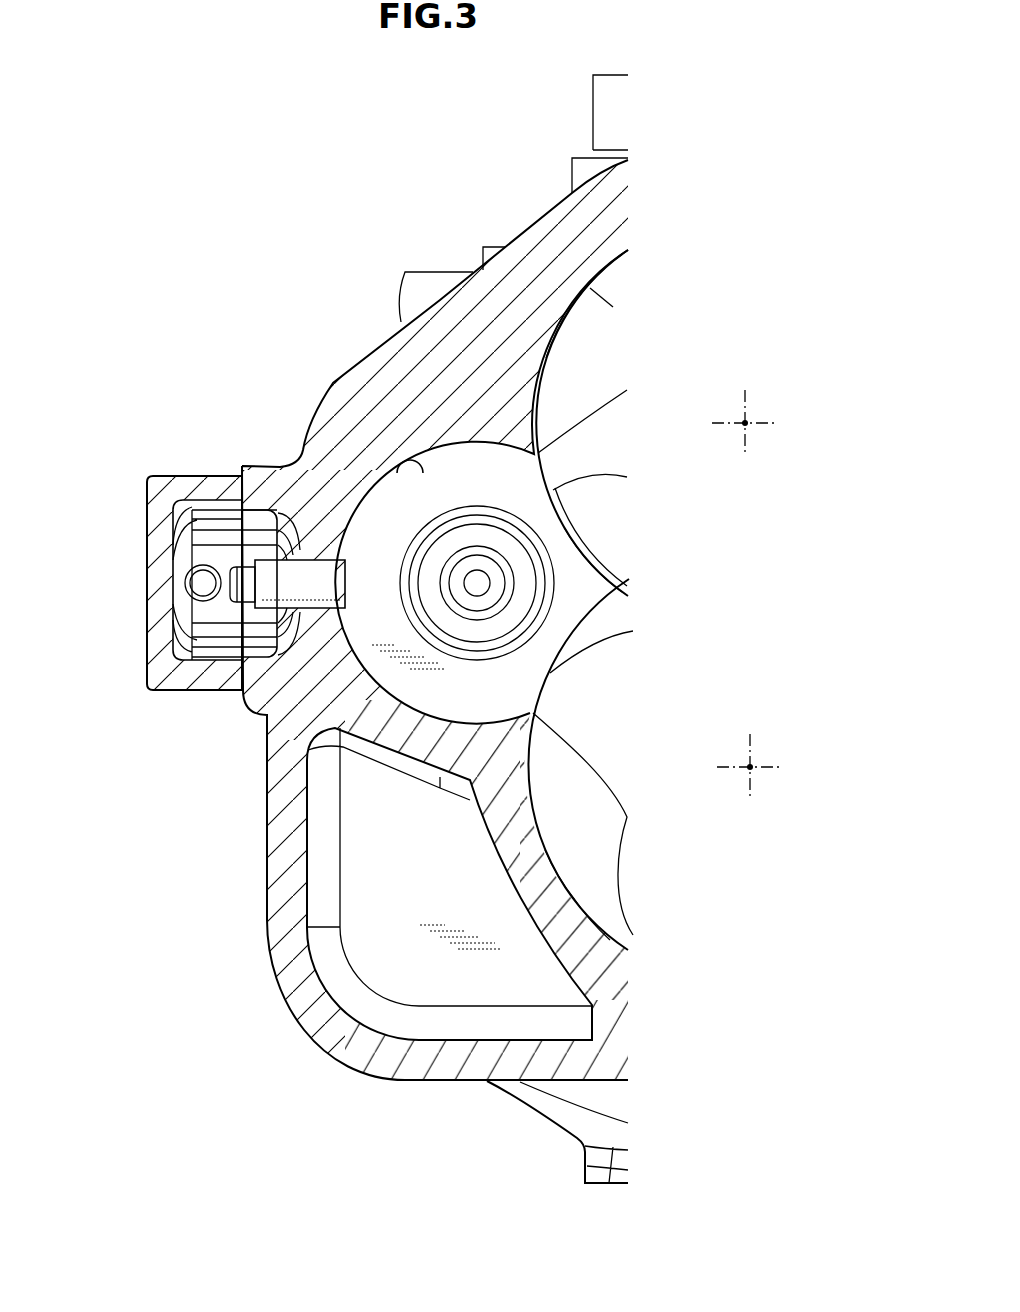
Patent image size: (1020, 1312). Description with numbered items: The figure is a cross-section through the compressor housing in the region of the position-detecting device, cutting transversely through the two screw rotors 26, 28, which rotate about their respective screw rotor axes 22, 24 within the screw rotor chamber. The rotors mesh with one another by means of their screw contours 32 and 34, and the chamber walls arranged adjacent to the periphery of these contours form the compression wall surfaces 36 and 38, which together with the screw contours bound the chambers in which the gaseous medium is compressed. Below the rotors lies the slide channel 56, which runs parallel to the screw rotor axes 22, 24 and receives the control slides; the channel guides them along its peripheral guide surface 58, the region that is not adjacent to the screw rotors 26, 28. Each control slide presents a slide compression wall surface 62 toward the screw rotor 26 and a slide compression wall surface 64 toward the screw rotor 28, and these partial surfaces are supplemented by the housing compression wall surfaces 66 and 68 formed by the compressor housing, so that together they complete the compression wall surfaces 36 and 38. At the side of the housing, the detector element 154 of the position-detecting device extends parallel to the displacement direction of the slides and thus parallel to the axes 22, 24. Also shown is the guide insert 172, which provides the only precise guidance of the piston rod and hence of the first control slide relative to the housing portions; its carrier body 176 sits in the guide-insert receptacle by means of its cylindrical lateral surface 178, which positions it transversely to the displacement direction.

The screw rotor axis 22 is at (752, 418).
The screw rotor axis 24 is at (758, 754).
The screw rotor 26 is at (600, 453).
The screw rotor 28 is at (605, 768).
The screw contour 32 is at (590, 422).
The screw contour 34 is at (550, 731).
The compression wall surface 36 is at (572, 315).
The compression wall surface 38 is at (570, 892).
The slide channel 56 is at (423, 450).
The peripheral guide surface 58 is at (397, 705).
The slide compression wall surface 62 is at (590, 545).
The slide compression wall surface 64 is at (600, 603).
The housing compression wall surface 66 is at (550, 357).
The housing compression wall surface 68 is at (545, 850).
The detector element 154 is at (186, 577).
The guide insert 172 is at (210, 605).
The carrier body 176 is at (247, 590).
The cylindrical lateral surface 178 is at (203, 560).